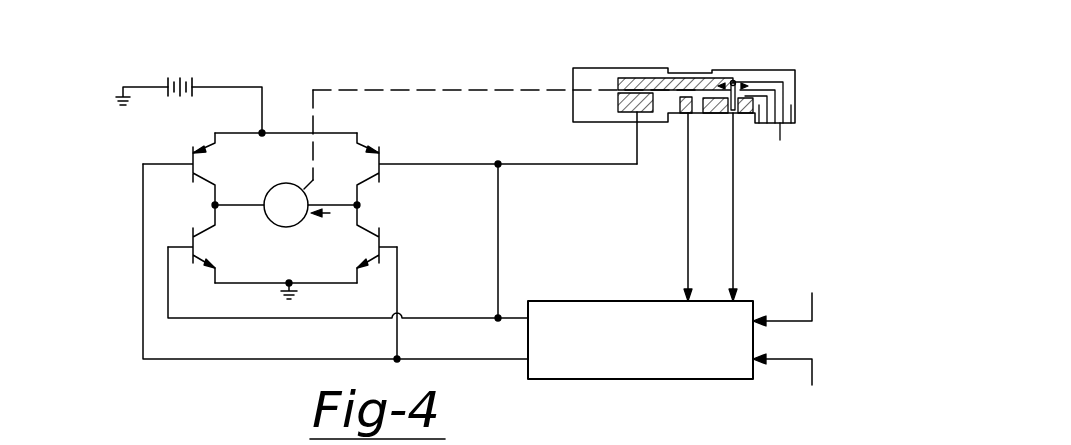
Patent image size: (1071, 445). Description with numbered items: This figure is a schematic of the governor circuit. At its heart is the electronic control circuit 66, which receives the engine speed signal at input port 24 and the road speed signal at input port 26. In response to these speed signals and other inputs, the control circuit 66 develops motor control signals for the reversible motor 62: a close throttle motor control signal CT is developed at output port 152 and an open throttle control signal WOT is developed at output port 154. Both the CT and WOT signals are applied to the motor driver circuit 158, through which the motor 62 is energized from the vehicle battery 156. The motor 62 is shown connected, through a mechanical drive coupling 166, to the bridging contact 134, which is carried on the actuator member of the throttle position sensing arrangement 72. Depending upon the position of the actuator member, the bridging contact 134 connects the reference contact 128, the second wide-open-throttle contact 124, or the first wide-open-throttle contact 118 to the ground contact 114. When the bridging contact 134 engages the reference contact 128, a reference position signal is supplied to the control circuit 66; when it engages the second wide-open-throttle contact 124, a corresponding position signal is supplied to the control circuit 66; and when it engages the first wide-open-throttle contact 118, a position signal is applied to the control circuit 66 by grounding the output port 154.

The vehicle battery 156 is at (195, 82).
The motor driver circuit 158 is at (291, 112).
The mechanical drive coupling 166 is at (463, 88).
The ground contact 114 is at (633, 78).
The bridging contact 134 is at (737, 84).
The throttle position sensor 72 is at (773, 70).
The wot-1 contact 118 is at (618, 100).
The wot-2 contact 124 is at (692, 113).
The reference contact 128 is at (737, 113).
The reversible motor 62 is at (287, 228).
The output port 154 is at (512, 318).
The output port 152 is at (523, 360).
The electronic control circuit 66 is at (710, 380).
The input port 24 is at (793, 315).
The input port 26 is at (795, 358).